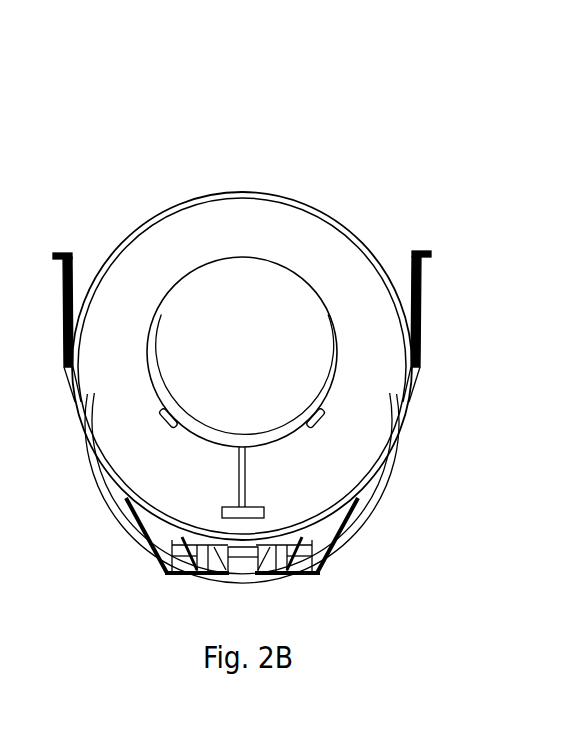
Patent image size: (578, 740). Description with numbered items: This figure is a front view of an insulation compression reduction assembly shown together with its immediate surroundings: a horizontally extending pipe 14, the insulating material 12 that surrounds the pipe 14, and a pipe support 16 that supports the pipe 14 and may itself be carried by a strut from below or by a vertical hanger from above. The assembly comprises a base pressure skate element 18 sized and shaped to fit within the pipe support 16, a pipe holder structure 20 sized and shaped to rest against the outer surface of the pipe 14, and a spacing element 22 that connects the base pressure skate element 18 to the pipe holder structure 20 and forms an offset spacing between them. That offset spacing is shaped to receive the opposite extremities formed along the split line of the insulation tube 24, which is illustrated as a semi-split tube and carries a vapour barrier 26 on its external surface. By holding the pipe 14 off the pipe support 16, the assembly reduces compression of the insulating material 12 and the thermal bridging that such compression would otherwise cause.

The insulating material 12 is at (313, 268).
The pipe 14 is at (333, 357).
The pipe support 16 is at (370, 480).
The base pressure skate element 18 is at (283, 508).
The pipe holder structure 20 is at (300, 424).
The spacing element 22 is at (240, 495).
The insulation tube 24 is at (263, 235).
The vapour barrier 26 is at (297, 202).